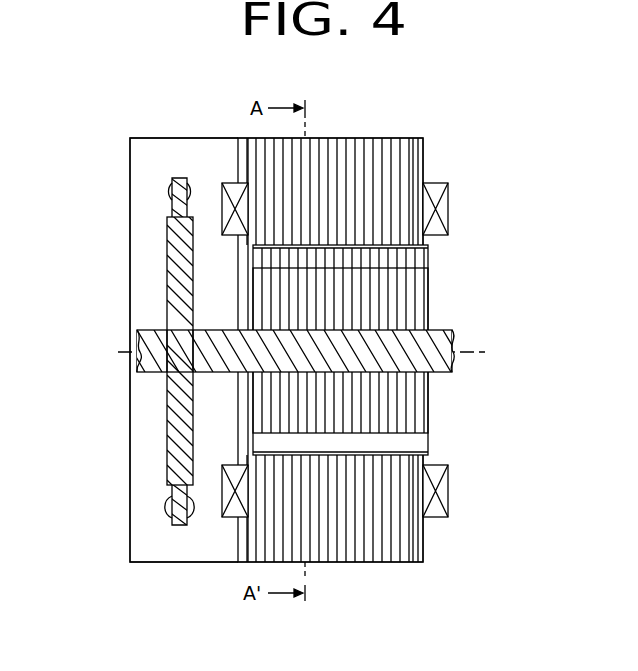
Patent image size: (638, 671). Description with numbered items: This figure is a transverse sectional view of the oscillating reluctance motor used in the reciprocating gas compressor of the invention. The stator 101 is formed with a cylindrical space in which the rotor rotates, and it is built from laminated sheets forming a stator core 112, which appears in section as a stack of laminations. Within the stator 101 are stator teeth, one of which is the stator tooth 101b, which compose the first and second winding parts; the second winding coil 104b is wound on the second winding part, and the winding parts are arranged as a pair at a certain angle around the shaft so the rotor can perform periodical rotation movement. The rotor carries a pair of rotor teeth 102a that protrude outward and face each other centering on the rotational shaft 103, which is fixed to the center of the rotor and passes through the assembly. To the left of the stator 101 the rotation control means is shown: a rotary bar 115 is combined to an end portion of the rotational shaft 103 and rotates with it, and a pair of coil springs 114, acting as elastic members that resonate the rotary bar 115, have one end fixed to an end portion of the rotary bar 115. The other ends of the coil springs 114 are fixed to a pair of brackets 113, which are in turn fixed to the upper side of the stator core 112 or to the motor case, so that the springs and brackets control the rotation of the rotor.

The stator 101 is at (423, 130).
The stator tooth 101b is at (410, 238).
The rotor teeth 102a is at (415, 262).
The rotational shaft 103 is at (441, 330).
The second winding coil 104b is at (445, 493).
The stator core 112 is at (418, 152).
The brackets 113 is at (150, 155).
The coil springs 114 is at (170, 190).
The rotary bar 115 is at (170, 256).